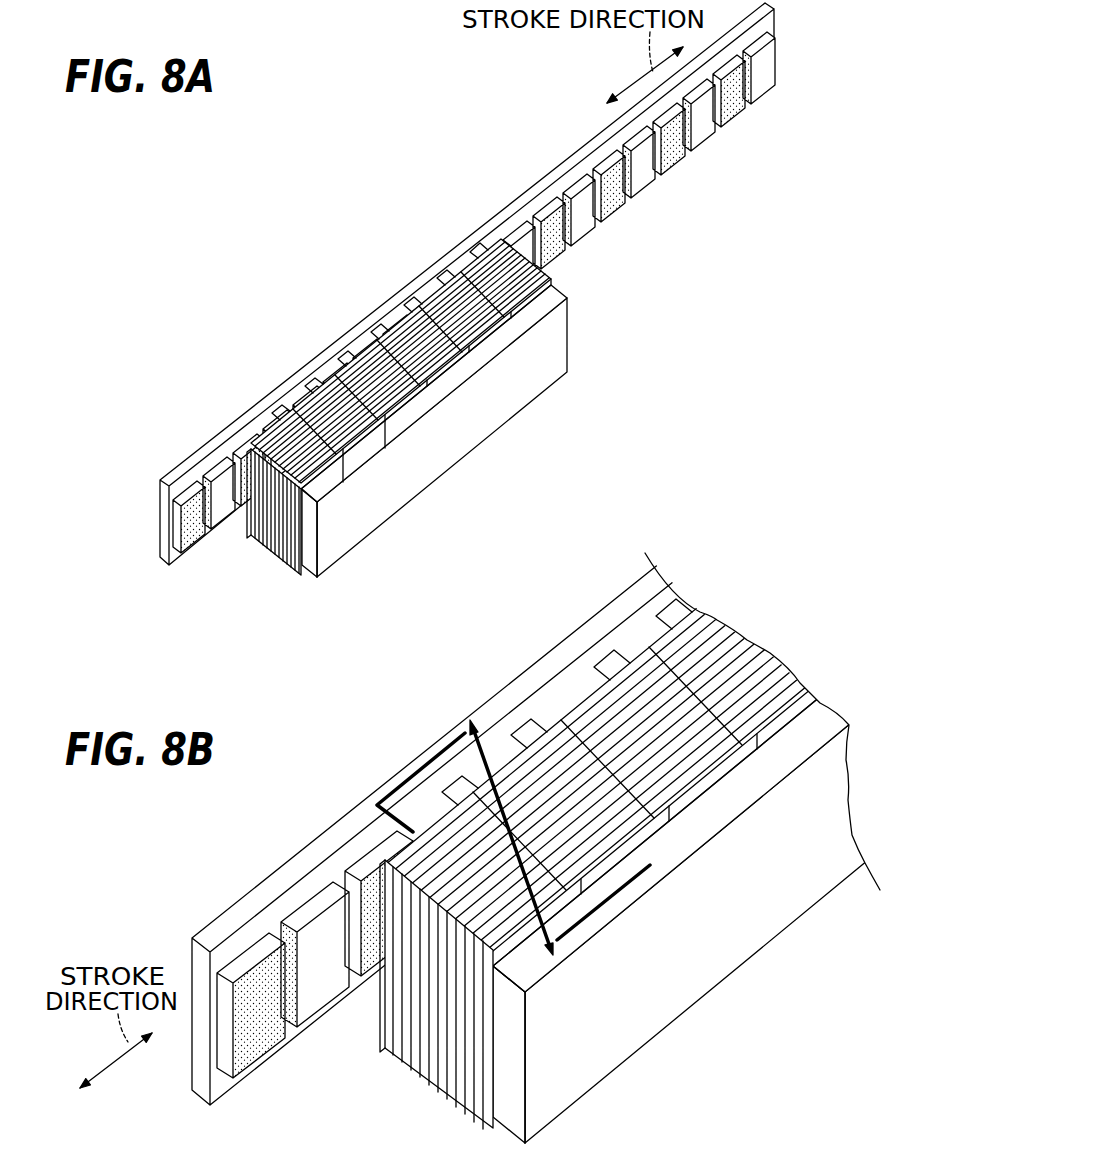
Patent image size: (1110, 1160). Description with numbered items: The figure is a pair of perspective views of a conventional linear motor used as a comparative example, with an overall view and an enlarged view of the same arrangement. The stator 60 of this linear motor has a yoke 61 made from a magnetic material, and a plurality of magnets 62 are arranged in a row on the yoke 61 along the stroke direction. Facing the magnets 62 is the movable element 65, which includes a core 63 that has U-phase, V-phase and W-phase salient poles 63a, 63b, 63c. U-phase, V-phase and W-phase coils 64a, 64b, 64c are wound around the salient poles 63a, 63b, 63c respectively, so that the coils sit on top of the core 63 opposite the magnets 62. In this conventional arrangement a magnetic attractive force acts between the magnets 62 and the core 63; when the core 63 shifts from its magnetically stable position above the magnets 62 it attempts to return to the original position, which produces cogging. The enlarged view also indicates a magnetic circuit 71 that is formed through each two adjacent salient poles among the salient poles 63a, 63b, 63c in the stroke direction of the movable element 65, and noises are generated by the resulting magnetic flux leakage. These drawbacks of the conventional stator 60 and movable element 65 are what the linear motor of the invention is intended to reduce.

In FIG. 8A, the stator 60 is at (467, 284).
In FIG. 8B, the stator 60 is at (533, 683).
In FIG. 8A, the yoke 61 is at (538, 180).
In FIG. 8A, the magnets 62 is at (553, 253).
In FIG. 8B, the magnets 62 is at (315, 954).
In FIG. 8A, the core 63 is at (447, 457).
In FIG. 8B, the core 63 is at (602, 890).
In FIG. 8A, the U-phase salient pole 63a is at (325, 513).
In FIG. 8B, the U-phase salient pole 63a is at (390, 853).
In FIG. 8A, the V-phase salient pole 63b is at (365, 475).
In FIG. 8B, the V-phase salient pole 63b is at (473, 760).
In FIG. 8A, the W-phase salient pole 63c is at (403, 435).
In FIG. 8A, the U-phase coil 64a is at (296, 440).
In FIG. 8B, the U-phase coil 64a is at (649, 742).
In FIG. 8A, the V-phase coil 64b is at (337, 410).
In FIG. 8A, the W-phase coil 64c is at (378, 378).
In FIG. 8A, the movable element 65 is at (289, 585).
In FIG. 8B, the movable element 65 is at (436, 994).
In FIG. 8B, the magnetic circuit 71 is at (610, 903).